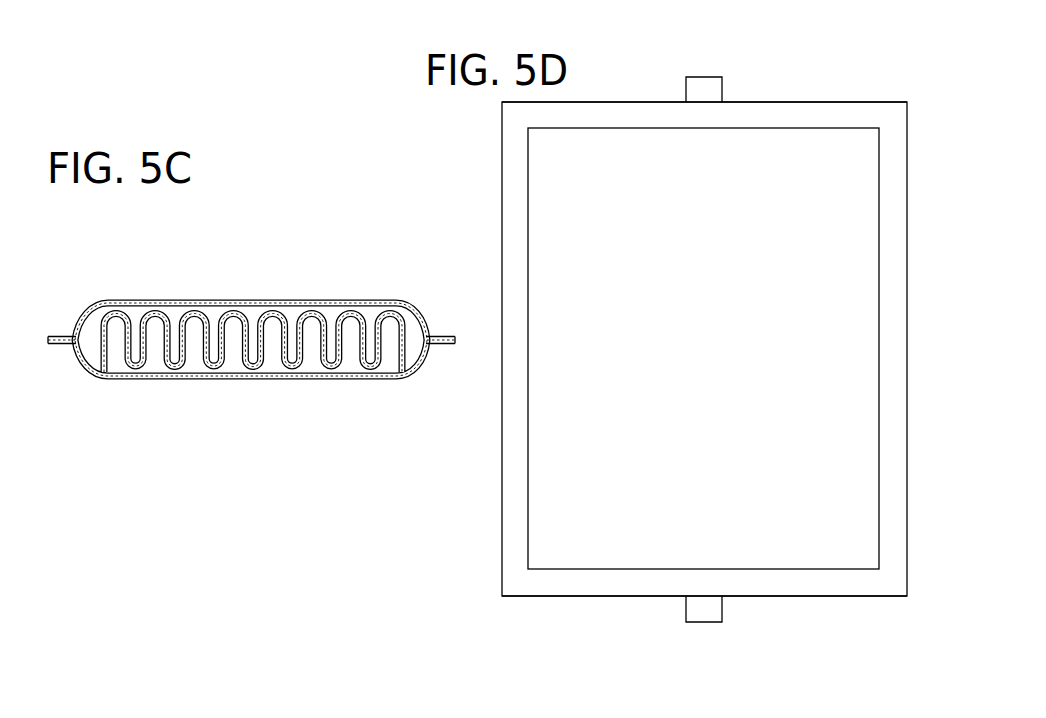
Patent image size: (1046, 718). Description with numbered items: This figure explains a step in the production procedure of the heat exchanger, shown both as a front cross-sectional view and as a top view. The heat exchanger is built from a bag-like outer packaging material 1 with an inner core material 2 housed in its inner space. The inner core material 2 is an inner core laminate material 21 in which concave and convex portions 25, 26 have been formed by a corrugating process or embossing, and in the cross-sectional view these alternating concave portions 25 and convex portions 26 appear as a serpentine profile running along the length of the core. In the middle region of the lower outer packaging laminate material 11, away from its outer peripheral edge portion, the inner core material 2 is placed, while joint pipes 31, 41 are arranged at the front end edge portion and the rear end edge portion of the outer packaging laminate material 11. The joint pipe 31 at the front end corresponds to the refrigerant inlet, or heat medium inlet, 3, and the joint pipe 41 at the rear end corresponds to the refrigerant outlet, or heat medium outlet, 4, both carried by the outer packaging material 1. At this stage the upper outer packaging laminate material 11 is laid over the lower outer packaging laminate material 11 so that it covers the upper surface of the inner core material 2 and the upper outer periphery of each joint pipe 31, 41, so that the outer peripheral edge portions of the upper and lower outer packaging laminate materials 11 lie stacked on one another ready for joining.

In FIG. 5C, the outer packaging material 1 is at (253, 332).
In FIG. 5D, the outer packaging material 1 is at (643, 349).
In FIG. 5C, the outer packaging laminate material 11 is at (325, 305).
In FIG. 5D, the outer packaging laminate material 11 is at (555, 498).
In FIG. 5C, the inner core material 2 is at (251, 383).
In FIG. 5C, the inner core laminate material 21 is at (344, 363).
In FIG. 5C, the concave portion 25 is at (172, 377).
In FIG. 5C, the convex portion 26 is at (192, 305).
In FIG. 5D, the refrigerant inlet 3 is at (720, 112).
In FIG. 5D, the joint pipe 31 is at (700, 90).
In FIG. 5D, the refrigerant outlet 4 is at (720, 579).
In FIG. 5D, the joint pipe 41 is at (703, 610).